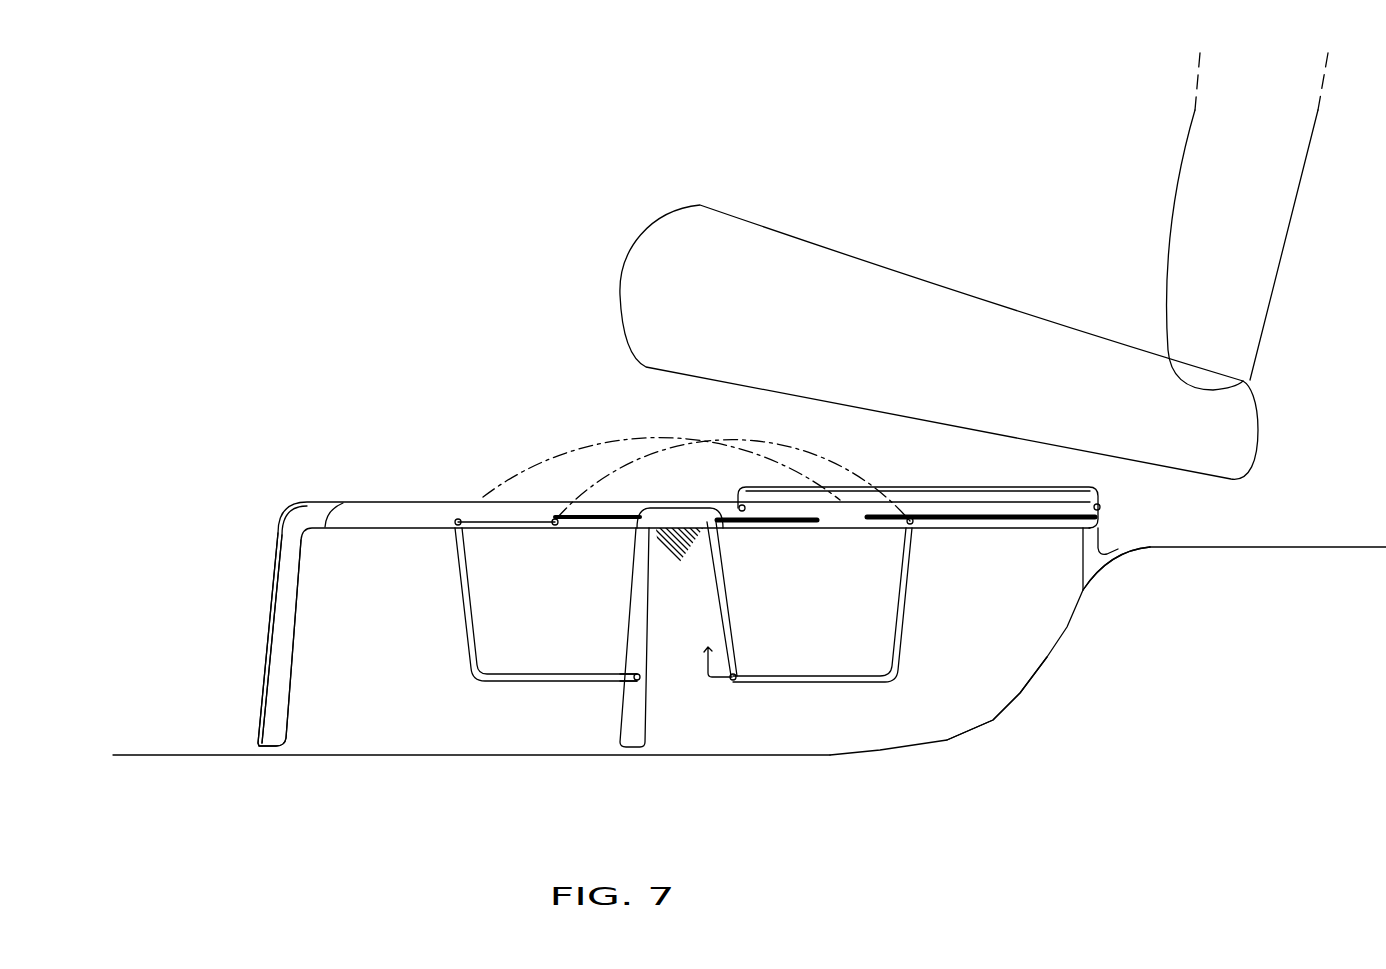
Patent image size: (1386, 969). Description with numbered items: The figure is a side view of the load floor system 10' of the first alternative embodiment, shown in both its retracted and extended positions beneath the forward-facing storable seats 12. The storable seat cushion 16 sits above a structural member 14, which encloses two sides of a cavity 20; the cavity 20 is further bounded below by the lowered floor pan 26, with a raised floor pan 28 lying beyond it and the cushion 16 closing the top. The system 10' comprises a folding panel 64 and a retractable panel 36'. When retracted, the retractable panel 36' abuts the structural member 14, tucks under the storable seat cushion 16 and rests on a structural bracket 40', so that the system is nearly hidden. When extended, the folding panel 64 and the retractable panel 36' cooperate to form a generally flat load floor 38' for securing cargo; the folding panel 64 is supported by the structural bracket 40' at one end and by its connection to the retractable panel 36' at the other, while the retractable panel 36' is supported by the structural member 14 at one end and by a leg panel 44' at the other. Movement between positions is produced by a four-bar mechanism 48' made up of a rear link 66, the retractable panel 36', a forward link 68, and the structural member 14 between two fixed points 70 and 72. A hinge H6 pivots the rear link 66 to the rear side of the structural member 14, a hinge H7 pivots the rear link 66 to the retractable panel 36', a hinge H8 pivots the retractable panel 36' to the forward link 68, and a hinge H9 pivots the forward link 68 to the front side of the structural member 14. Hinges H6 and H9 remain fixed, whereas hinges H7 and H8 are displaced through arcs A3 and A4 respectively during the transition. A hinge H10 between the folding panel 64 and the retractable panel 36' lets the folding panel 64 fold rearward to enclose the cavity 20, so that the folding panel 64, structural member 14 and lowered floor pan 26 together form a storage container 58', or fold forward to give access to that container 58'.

The load floor system 10' is at (424, 336).
The forward-facing storable seats 12 is at (1090, 383).
The structural member 14 is at (663, 745).
The storable seat cushion 16 is at (742, 232).
The cavity 20 is at (1026, 633).
The lowered floor pan 26 is at (830, 757).
The raised floor pan 28 is at (1322, 552).
The retractable panel 36' is at (674, 597).
The load floor 38' is at (492, 458).
The structural bracket 40' is at (1141, 553).
The leg panel 44' is at (303, 639).
The four-bar mechanism 48' is at (507, 762).
The storage container 58' is at (997, 715).
The folding panel 64 is at (1008, 492).
The rear link 66 is at (620, 515).
The forward link 68 is at (468, 643).
The fixed point 70 is at (735, 673).
The fixed point 72 is at (633, 672).
The hinge H6 is at (733, 683).
The hinge H7 is at (555, 518).
The hinge H8 is at (458, 518).
The hinge H9 is at (635, 684).
The hinge H10 is at (740, 505).
The arc A3 is at (827, 460).
The arc A4 is at (540, 466).